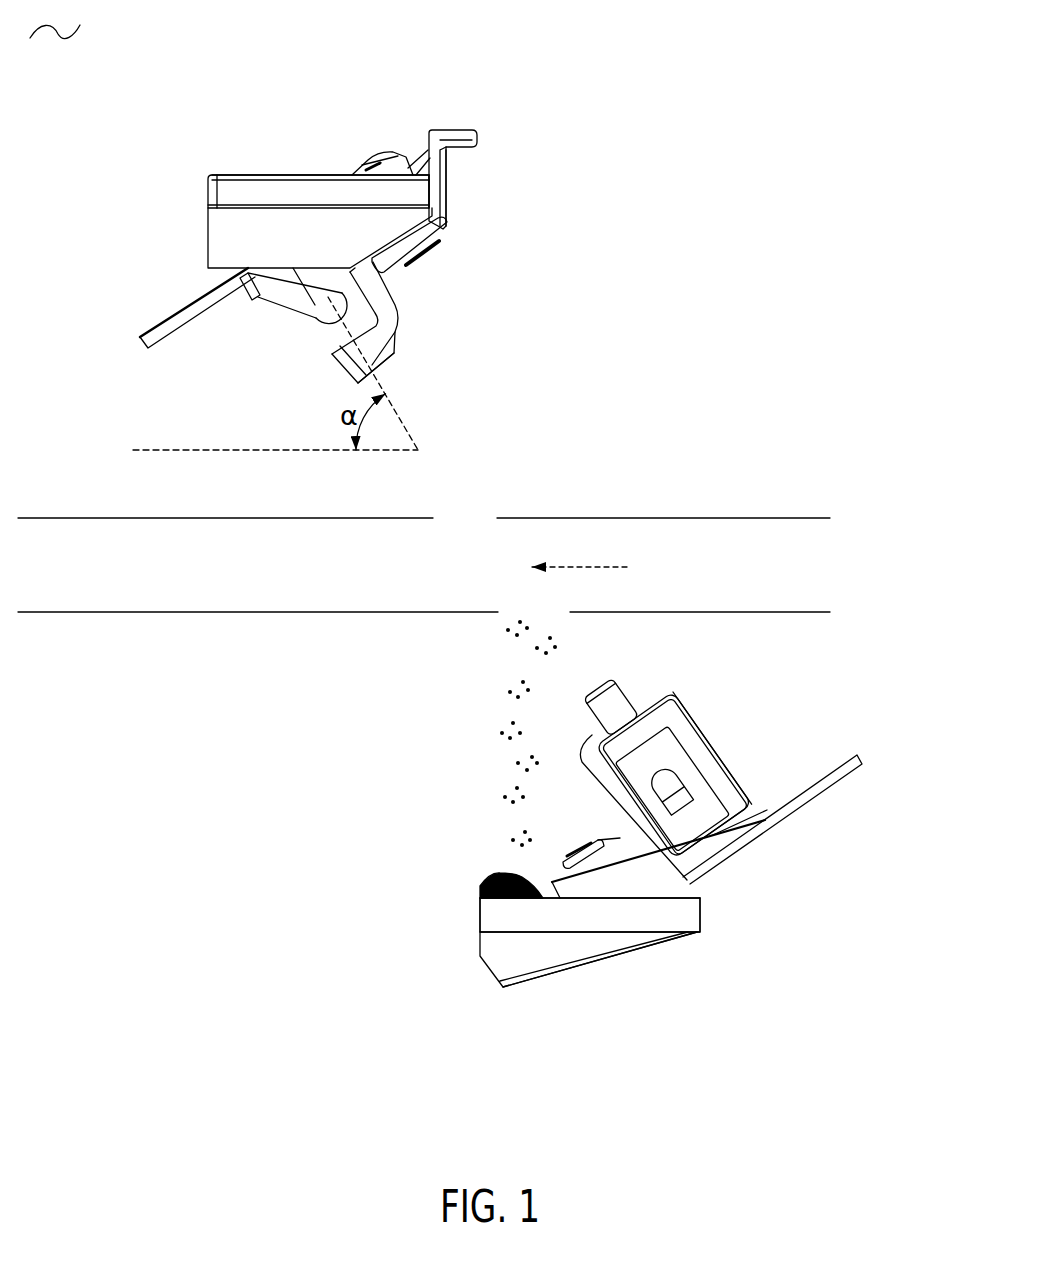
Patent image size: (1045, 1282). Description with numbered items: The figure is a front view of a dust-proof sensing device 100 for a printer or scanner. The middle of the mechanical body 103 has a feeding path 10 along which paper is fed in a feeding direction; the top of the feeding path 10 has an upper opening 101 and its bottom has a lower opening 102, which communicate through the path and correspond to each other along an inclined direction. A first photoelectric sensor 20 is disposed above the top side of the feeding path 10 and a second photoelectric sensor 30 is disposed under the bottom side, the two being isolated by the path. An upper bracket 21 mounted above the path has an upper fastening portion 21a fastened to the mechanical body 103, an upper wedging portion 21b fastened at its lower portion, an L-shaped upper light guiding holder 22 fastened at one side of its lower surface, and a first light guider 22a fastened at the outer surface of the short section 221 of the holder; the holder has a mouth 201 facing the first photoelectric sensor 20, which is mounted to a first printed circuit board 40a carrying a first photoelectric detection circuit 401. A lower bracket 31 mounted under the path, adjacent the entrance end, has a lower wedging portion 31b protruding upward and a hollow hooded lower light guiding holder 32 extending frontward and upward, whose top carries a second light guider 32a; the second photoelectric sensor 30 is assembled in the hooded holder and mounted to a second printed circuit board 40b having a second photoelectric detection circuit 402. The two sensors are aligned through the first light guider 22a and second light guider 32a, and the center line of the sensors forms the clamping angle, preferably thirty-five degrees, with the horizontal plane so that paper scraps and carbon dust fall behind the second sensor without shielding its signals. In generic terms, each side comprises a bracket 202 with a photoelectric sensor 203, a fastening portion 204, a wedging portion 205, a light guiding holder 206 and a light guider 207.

The dust-proof sensing device 100 is at (55, 19).
The feeding path 10 is at (842, 557).
The upper opening 101 is at (467, 517).
The lower opening 102 is at (553, 610).
The mechanical body 103 is at (300, 622).
The first photoelectric sensor 20 is at (302, 310).
The mouth 201 is at (320, 335).
The bracket 202 is at (452, 196).
The photoelectric sensor 203 is at (308, 328).
The fastening portion 204 is at (246, 172).
The wedging portion 205 is at (203, 243).
The light guiding holder 206 is at (405, 317).
The light guider 207 is at (388, 372).
The upper bracket 21 is at (475, 166).
The upper fastening portion 21a is at (222, 199).
The upper wedging portion 21b is at (445, 228).
The L-shaped upper light guiding holder 22 is at (397, 305).
The first light guider 22a is at (388, 352).
The short section 221 is at (350, 362).
The second photoelectric sensor 30 is at (716, 860).
The lower bracket 31 is at (672, 947).
The lower wedging portion 31b is at (705, 905).
The hooded lower light guiding holder 32 is at (687, 730).
The second light guider 32a is at (615, 690).
The first printed circuit board 40a is at (188, 303).
The second printed circuit board 40b is at (760, 830).
The first photoelectric detection circuit 401 is at (410, 170).
The second photoelectric detection circuit 402 is at (717, 876).